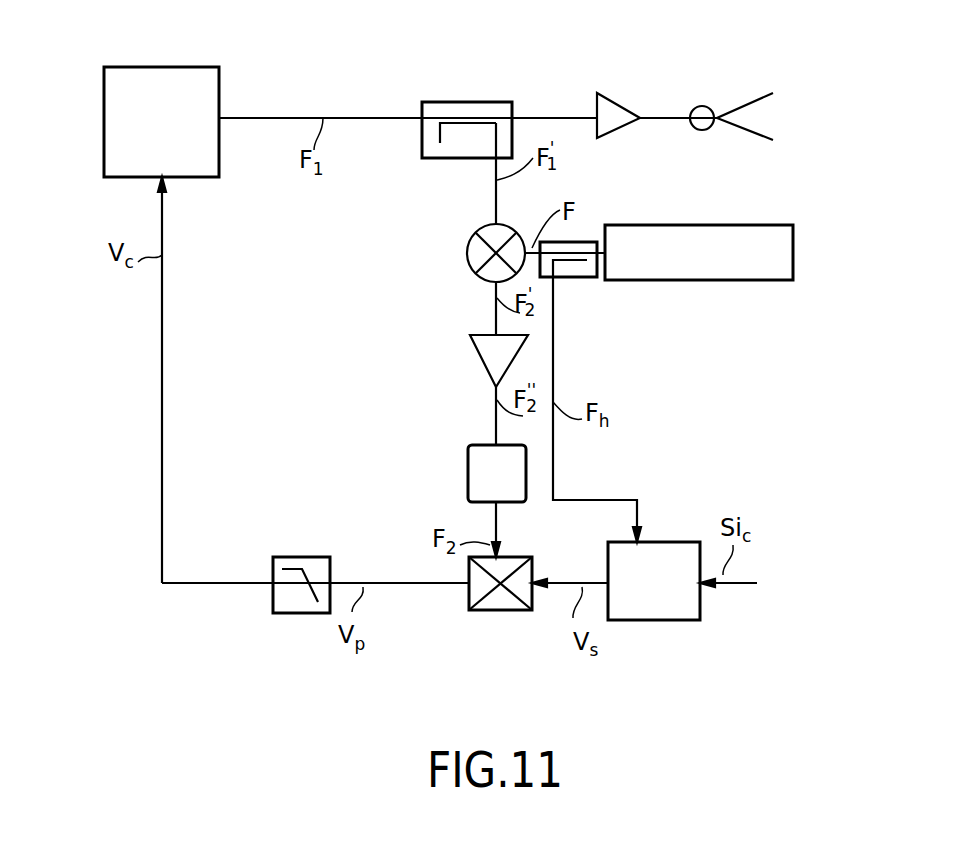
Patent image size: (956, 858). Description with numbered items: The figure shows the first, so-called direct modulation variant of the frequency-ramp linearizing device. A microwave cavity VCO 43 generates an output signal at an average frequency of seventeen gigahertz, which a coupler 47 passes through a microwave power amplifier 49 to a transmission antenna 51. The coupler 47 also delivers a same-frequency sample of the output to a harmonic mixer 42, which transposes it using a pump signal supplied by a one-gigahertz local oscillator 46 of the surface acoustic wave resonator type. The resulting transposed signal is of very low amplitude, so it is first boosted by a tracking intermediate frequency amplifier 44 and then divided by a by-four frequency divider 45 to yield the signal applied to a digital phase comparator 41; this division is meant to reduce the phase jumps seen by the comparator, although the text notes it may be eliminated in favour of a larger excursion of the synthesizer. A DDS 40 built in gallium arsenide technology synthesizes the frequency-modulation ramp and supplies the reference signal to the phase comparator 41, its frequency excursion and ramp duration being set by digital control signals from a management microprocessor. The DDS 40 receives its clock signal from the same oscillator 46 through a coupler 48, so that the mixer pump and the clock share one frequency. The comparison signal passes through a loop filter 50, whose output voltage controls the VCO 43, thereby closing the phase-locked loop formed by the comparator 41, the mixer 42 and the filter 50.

The DDS 40 is at (668, 620).
The digital phase comparator 41 is at (468, 598).
The harmonic mixer 42 is at (512, 228).
The VCO 43 is at (130, 67).
The tracking amplifier 44 is at (480, 360).
The by-four frequency divider 45 is at (468, 445).
The local oscillator 46 is at (657, 283).
The coupler 47 is at (493, 102).
The coupler 48 is at (573, 242).
The microwave power amplifier 49 is at (618, 102).
The loop filter 50 is at (297, 613).
The transmission antenna 51 is at (702, 106).